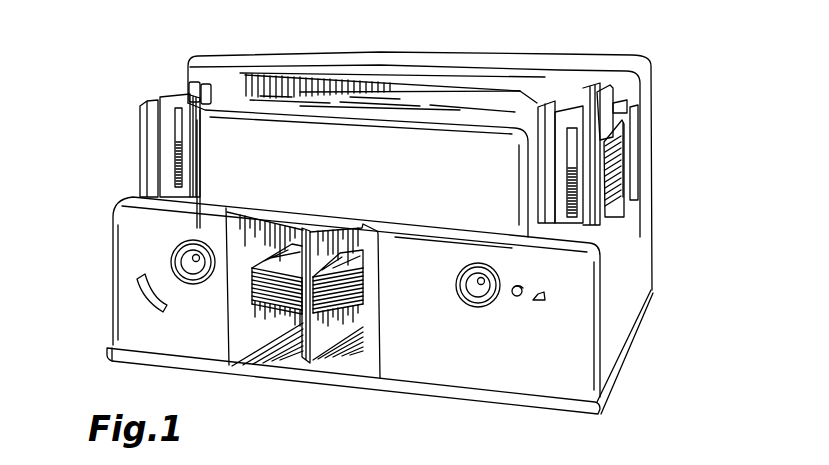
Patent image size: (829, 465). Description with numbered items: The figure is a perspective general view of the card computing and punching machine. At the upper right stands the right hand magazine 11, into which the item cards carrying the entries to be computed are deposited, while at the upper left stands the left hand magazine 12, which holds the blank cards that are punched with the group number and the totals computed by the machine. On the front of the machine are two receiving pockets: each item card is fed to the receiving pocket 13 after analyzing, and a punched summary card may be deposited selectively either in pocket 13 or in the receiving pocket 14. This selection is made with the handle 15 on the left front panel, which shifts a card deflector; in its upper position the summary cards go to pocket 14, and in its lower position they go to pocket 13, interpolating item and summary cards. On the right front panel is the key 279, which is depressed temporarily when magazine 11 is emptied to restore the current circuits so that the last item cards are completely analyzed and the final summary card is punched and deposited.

The right hand magazine 11 is at (607, 108).
The left hand magazine 12 is at (170, 127).
The receiving pocket 13 is at (337, 353).
The receiving pocket 14 is at (273, 350).
The handle 15 is at (137, 279).
The key 279 is at (515, 297).